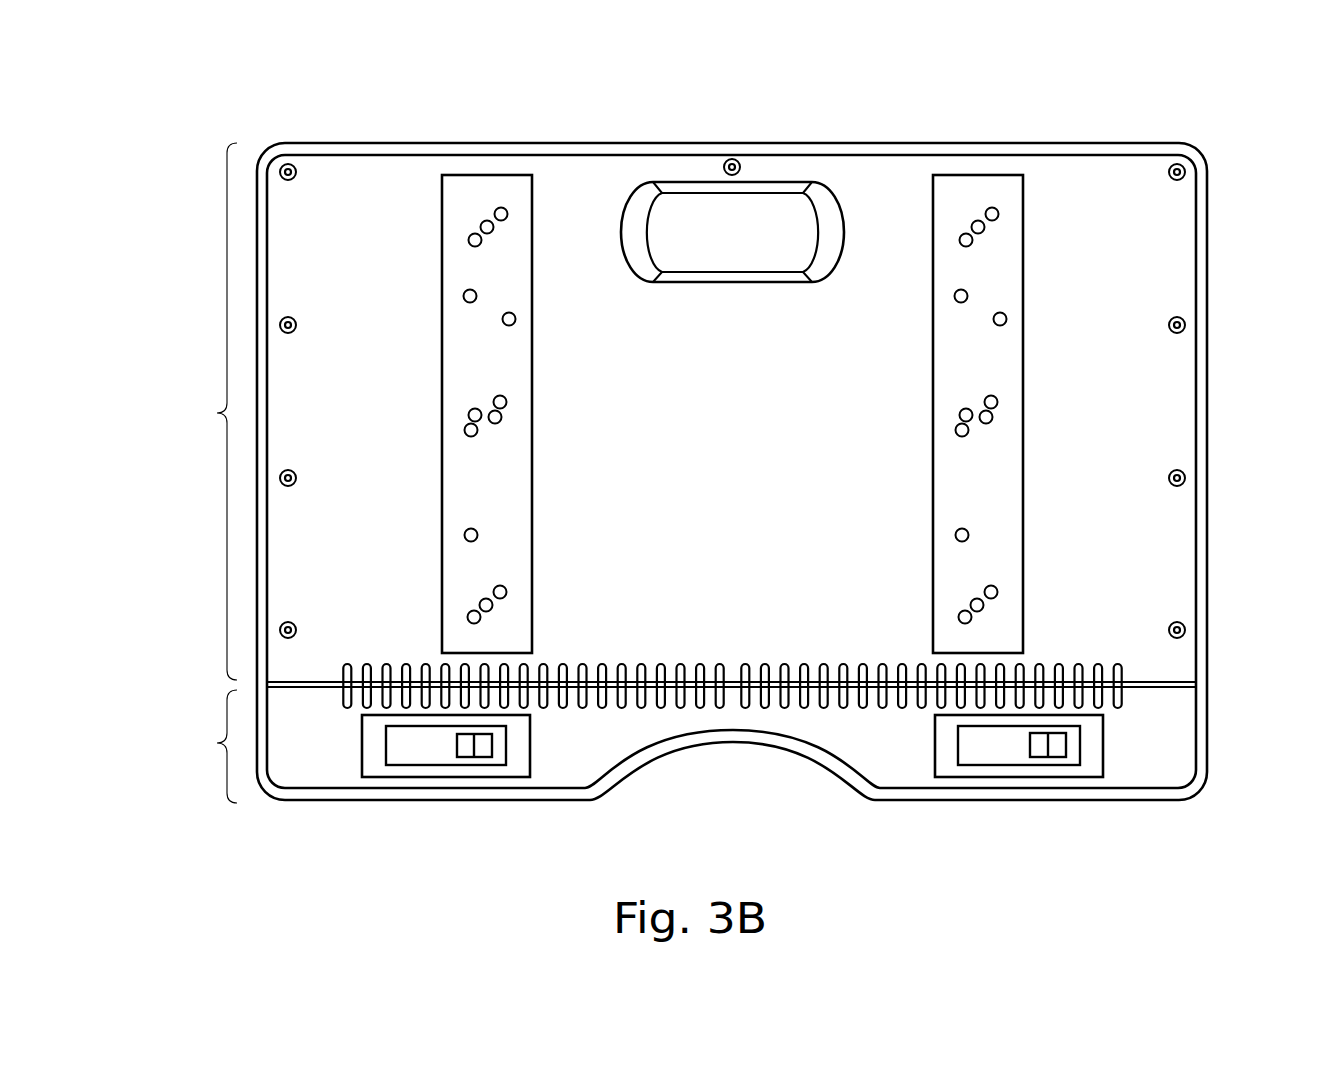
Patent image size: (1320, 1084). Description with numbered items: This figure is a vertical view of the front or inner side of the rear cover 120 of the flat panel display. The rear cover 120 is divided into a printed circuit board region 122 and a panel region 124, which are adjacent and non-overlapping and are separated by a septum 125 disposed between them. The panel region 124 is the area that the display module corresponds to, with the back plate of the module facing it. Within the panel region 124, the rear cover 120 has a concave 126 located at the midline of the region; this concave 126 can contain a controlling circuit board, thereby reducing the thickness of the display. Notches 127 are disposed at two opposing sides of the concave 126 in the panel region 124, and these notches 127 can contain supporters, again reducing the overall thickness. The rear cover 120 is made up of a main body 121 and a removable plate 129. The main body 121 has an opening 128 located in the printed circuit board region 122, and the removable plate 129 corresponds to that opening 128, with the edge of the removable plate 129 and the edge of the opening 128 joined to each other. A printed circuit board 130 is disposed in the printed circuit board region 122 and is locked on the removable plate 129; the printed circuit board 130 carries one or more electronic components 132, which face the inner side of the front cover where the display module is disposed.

The rear cover 120 is at (130, 96).
The main body 121 is at (423, 142).
The printed circuit board region 122 is at (202, 746).
The panel region 124 is at (202, 411).
The septum 125 is at (1178, 684).
The concave 126 is at (713, 245).
The notches 127 is at (511, 499).
The opening 128 is at (808, 797).
The removable plate 129 is at (518, 759).
The printed circuit board 130 is at (408, 748).
The electronic components 132 is at (538, 744).